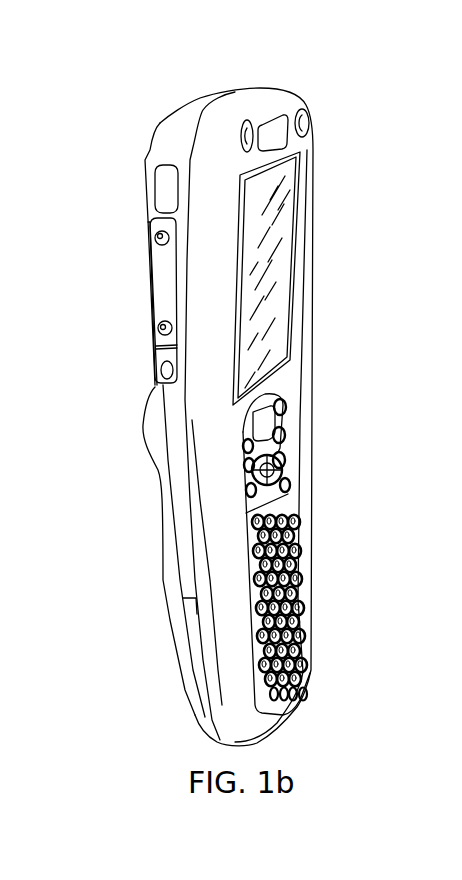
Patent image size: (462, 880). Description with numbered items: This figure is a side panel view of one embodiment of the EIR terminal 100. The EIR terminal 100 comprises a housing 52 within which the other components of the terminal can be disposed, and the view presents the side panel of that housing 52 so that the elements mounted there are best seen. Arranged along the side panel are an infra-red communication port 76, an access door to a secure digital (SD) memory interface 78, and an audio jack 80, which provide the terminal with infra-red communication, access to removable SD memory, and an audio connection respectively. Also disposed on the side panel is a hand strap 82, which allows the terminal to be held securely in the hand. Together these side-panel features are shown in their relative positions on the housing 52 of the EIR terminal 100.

The EIR terminal 100 is at (330, 92).
The housing 52 is at (188, 117).
The infra-red communication port 76 is at (166, 186).
The access door to a secure digital (SD) memory interface 78 is at (163, 282).
The audio jack 80 is at (167, 368).
The hand strap 82 is at (168, 477).